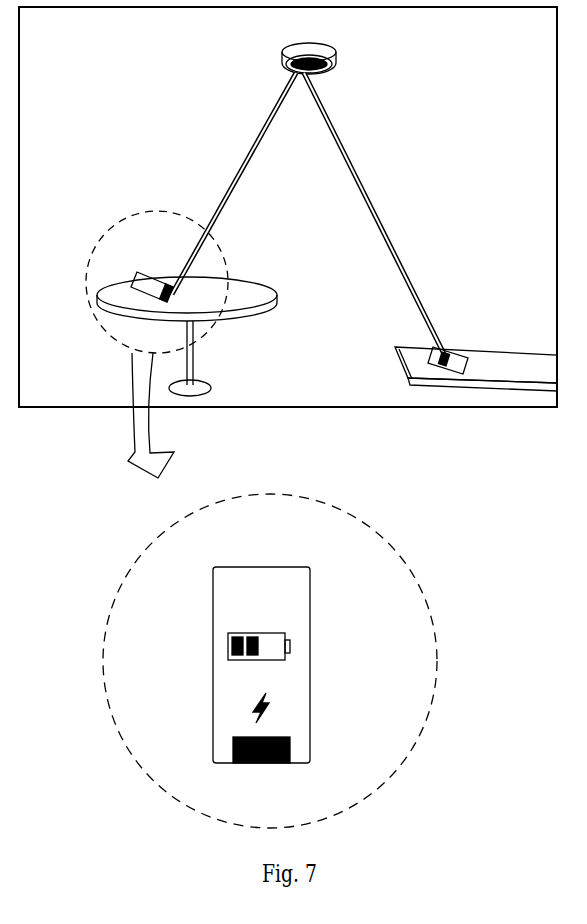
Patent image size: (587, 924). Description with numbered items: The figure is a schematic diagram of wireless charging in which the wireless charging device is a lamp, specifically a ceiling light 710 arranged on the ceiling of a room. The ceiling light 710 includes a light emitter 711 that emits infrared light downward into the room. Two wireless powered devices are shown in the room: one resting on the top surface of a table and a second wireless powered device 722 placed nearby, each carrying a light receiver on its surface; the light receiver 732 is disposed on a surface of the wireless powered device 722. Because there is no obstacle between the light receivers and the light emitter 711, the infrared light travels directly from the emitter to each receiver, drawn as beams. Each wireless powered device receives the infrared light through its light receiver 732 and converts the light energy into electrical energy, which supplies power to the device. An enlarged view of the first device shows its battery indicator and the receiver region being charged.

The ceiling light 710 is at (329, 52).
The light emitter 711 is at (328, 80).
The wireless powered device 722 is at (459, 349).
The light receiver 732 is at (450, 362).